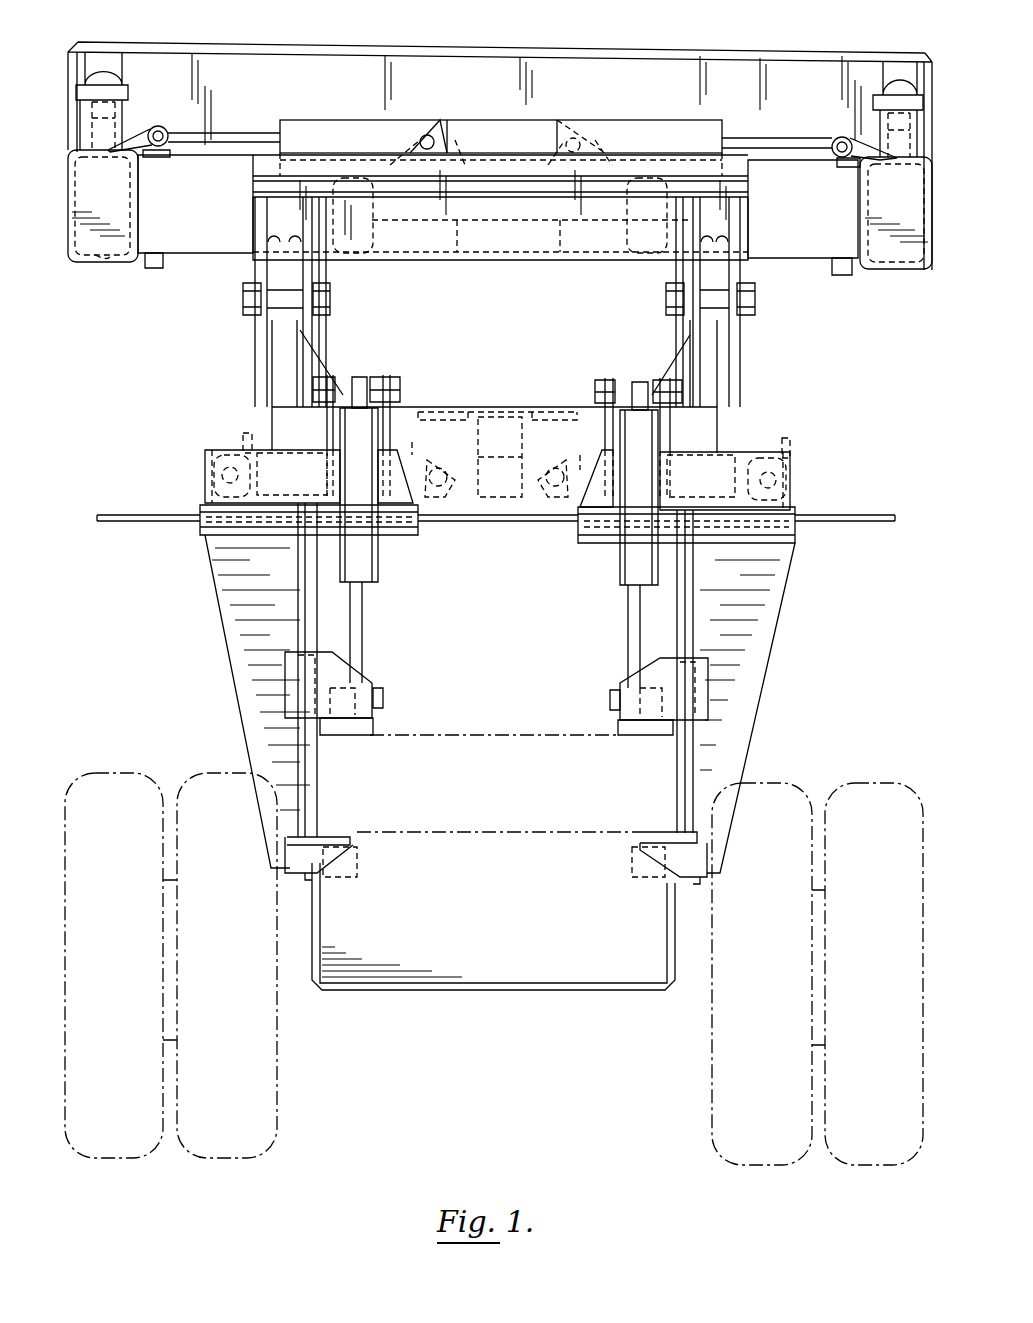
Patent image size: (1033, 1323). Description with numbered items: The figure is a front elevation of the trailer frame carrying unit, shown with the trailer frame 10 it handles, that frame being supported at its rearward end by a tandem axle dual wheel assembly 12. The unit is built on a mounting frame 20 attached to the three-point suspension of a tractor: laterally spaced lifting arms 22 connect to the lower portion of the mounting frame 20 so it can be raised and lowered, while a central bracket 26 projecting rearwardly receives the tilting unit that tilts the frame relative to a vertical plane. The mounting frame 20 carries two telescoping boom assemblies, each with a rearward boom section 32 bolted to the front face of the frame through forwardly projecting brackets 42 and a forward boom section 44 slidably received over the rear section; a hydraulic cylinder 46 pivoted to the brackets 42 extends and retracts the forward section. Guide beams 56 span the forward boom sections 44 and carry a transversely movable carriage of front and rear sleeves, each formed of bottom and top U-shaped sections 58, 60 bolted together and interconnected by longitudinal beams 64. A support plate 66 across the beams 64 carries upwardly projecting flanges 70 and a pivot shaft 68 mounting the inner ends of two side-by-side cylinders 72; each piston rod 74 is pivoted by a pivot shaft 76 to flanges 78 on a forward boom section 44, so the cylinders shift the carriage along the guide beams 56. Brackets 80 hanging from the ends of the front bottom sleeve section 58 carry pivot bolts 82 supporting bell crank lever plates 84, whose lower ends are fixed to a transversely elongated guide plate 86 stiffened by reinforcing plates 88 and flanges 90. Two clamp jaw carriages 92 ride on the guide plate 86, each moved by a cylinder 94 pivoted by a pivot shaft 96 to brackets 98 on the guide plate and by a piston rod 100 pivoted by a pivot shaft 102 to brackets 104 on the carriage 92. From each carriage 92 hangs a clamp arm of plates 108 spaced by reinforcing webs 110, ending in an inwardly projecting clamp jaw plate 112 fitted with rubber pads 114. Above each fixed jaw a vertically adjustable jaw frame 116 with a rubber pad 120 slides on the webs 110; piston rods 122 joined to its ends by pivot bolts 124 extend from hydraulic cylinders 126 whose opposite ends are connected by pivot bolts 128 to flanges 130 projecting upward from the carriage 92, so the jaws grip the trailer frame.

The frame 10 is at (512, 832).
The tandem axle dual wheel assembly 12 is at (112, 746).
The mounting frame 20 is at (493, 60).
The lifting arms 22 is at (333, 878).
The central bracket 26 is at (500, 457).
The rearward boom section 32 is at (112, 258).
The brackets 42 is at (908, 64).
The forward boom section 44 is at (95, 268).
The cylinder 46 is at (108, 78).
The guide beams 56 is at (805, 262).
The bottom U-shaped section 58 is at (752, 240).
The top U-shaped section 60 is at (748, 178).
The beams 64 is at (373, 238).
The support plate 66 is at (540, 222).
The pivot shaft 68 is at (427, 134).
The flanges 70 is at (412, 148).
The cylinders 72 is at (330, 121).
The piston rod 74 is at (232, 134).
The pivot shaft 76 is at (160, 127).
The flanges 78 is at (140, 120).
The brackets 80 is at (497, 302).
The pivot bolt 82 is at (243, 302).
The lever plates 84 is at (280, 340).
The guide plate 86 is at (830, 516).
The reinforcing plates 88 is at (450, 428).
The flanges 90 is at (328, 370).
The clamp jaw carriages 92 is at (222, 530).
The cylinder 94 is at (413, 458).
The pivot shaft 96 is at (496, 488).
The brackets 98 is at (560, 470).
The piston rod 100 is at (256, 453).
The pivot shaft 102 is at (220, 475).
The brackets 104 is at (240, 448).
The plates 108 is at (218, 593).
The reinforcing webs 110 is at (300, 600).
The clamp jaw plate 112 is at (345, 858).
The rubber pads 114 is at (335, 837).
The jaw frame 116 is at (290, 668).
The rubber pad 120 is at (353, 735).
The piston rods 122 is at (362, 628).
The pivot bolts 124 is at (610, 698).
The hydraulic cylinders 126 is at (372, 555).
The pivot bolts 128 is at (408, 380).
The flanges 130 is at (358, 376).